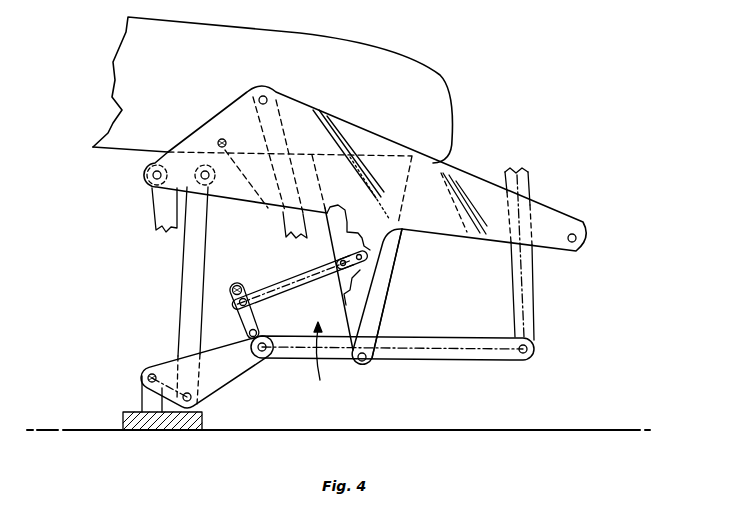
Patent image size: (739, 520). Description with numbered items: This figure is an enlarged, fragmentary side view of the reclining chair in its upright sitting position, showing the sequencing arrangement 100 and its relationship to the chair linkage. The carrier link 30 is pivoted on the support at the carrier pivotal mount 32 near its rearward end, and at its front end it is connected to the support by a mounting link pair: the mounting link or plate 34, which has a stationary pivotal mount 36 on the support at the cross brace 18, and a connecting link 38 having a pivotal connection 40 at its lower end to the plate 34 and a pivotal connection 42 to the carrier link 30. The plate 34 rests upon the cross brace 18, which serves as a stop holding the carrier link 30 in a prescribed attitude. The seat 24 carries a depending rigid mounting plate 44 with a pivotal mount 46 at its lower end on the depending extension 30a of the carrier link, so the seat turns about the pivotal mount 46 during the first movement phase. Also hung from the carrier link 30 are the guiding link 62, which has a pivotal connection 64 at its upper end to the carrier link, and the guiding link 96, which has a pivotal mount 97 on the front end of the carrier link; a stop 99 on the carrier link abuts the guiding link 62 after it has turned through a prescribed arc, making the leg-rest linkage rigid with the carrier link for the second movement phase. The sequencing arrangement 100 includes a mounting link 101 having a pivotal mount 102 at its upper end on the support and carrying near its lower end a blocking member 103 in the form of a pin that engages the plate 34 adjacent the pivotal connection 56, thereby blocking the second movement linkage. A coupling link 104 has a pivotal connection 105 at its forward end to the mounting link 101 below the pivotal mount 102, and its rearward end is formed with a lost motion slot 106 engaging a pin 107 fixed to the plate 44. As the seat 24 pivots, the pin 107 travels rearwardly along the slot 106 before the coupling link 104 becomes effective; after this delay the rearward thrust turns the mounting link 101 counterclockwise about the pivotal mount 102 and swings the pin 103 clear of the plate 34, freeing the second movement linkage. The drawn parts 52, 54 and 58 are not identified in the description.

The cross brace 18 is at (150, 427).
The seat 24 is at (398, 62).
The carrier link 30 is at (383, 143).
The depending extension of the carrier link 30a is at (366, 318).
The carrier pivotal mount 32 is at (576, 239).
The mounting link or plate 34 is at (227, 378).
The stationary pivotal mount 36 is at (148, 377).
The connecting link 38 is at (190, 258).
The pivotal connection 40 is at (202, 401).
The pivotal connection 42 is at (209, 178).
The depending rigid mounting plate 44 is at (398, 247).
The pivotal mount 46 is at (361, 364).
The post 52 is at (528, 307).
The lower link 54 is at (438, 352).
The pivotal connection 56 is at (264, 360).
The pivot 58 is at (523, 353).
The guiding link 62 is at (285, 222).
The pivotal connection 64 is at (259, 99).
The guiding link 96 is at (152, 200).
The pivotal mount 97 is at (152, 175).
The stop 99 is at (219, 141).
The sequencing arrangement 100 is at (313, 363).
The mounting link 101 is at (250, 317).
The pivotal mount 102 is at (235, 287).
The blocking member 103 is at (248, 333).
The coupling link 104 is at (272, 292).
The pivotal connection 105 is at (240, 303).
The lost motion slot 106 is at (340, 265).
The pin 107 is at (340, 266).